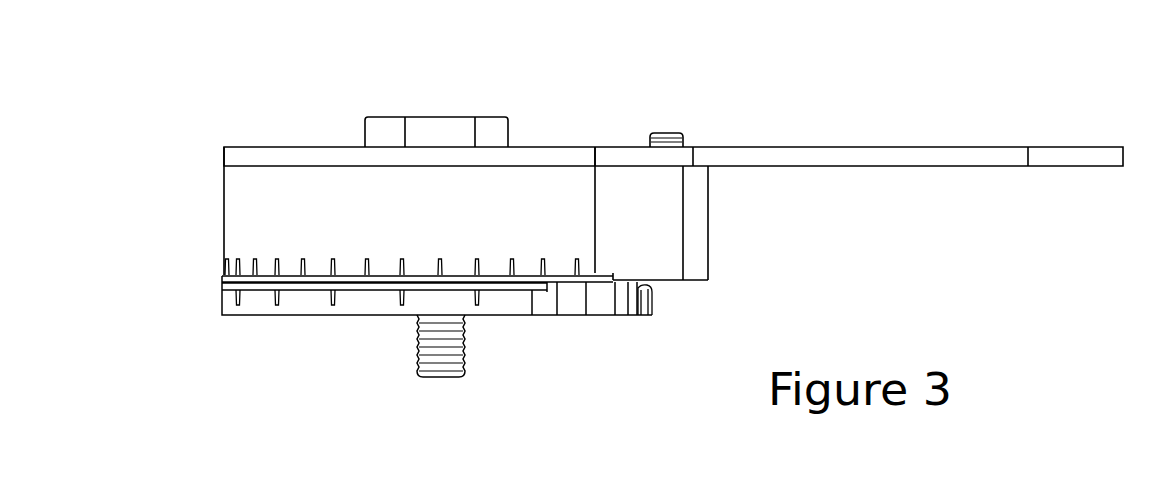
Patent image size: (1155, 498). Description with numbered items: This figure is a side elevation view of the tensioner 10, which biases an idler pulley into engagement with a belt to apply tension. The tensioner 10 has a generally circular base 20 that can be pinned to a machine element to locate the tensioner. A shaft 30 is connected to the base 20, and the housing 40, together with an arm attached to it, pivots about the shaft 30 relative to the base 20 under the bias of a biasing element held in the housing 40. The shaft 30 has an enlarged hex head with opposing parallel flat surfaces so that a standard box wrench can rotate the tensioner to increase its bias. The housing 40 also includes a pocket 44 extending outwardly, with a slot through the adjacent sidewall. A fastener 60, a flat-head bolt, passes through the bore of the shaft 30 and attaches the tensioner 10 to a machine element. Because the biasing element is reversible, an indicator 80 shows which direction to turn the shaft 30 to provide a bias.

The tensioner 10 is at (862, 90).
The base 20 is at (235, 312).
The shaft 30 is at (493, 130).
The housing 40 is at (237, 222).
The pocket 44 is at (697, 215).
The fastener 60 is at (430, 367).
The indicator 80 is at (673, 138).